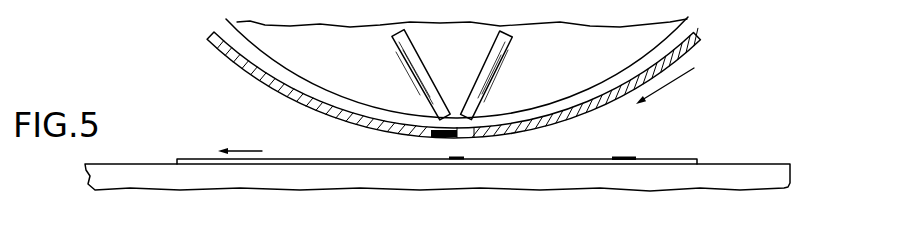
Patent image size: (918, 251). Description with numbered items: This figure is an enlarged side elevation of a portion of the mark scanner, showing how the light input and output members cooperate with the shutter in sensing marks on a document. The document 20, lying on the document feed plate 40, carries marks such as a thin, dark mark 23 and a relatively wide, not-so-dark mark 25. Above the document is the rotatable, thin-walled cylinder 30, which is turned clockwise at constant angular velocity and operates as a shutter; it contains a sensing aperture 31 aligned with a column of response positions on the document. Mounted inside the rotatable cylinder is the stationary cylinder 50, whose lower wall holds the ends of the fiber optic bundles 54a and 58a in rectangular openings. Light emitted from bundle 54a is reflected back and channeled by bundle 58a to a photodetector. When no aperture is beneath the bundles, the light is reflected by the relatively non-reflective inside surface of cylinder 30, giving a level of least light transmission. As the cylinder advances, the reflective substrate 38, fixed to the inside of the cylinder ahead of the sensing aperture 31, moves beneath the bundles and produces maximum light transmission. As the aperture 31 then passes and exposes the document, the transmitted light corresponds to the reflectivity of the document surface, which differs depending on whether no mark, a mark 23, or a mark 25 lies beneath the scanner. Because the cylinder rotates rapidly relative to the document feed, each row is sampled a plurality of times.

The document 20 is at (463, 145).
The thin, dark mark 23 is at (474, 192).
The relatively wide, not-so-dark mark 25 is at (645, 143).
The rotatable, thin-walled cylinder 30 is at (472, 77).
The sensing aperture 31 is at (503, 143).
The reflective substrate 38 is at (386, 139).
The document feed plate 40 is at (452, 161).
The stationary cylinder 50 is at (465, 62).
The optical fiber bundle group 54a is at (395, 75).
The optical fiber bundle 58a is at (507, 75).